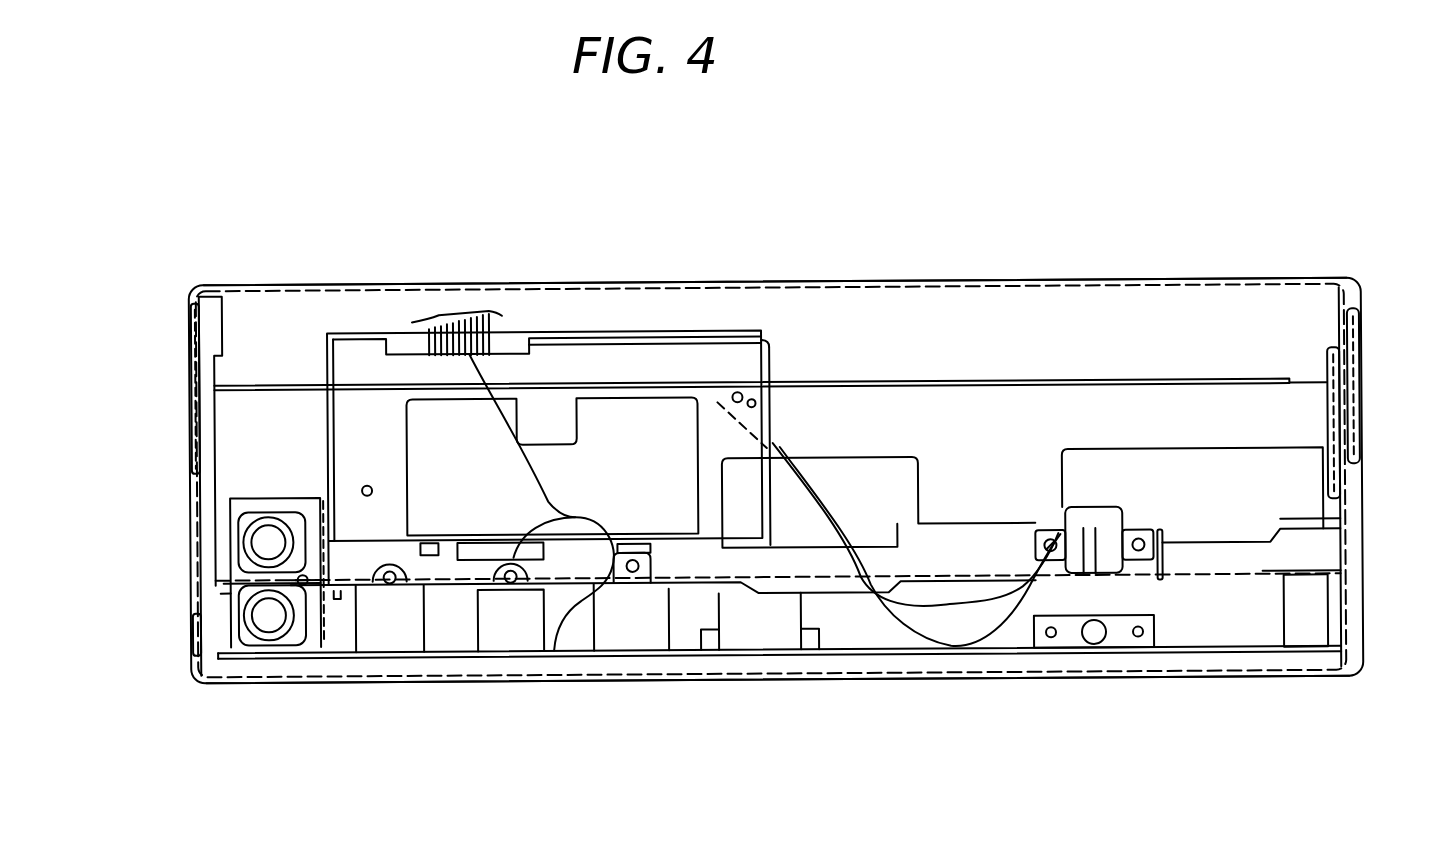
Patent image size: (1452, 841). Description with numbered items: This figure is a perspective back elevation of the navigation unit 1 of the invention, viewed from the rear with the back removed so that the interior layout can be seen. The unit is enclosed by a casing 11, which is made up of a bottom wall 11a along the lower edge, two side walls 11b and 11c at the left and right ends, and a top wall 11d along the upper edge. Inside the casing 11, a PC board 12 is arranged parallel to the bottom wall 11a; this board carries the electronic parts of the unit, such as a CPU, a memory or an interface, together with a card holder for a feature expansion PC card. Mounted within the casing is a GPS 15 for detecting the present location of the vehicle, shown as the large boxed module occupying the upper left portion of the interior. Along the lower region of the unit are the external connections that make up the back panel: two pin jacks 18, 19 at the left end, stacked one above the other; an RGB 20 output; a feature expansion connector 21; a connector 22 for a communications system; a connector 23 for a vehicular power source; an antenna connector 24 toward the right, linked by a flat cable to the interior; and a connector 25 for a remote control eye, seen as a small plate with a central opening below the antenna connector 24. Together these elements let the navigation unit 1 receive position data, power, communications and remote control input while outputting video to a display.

The navigation unit 1 is at (1150, 245).
The casing 11 is at (935, 281).
The bottom wall 11a is at (892, 673).
The side wall 11b is at (189, 396).
The side wall 11c is at (1364, 377).
The top wall 11d is at (652, 281).
The PC board 12 is at (1250, 652).
The GPS 15 is at (367, 445).
The pin jack 18 is at (246, 539).
The pin jack 19 is at (243, 608).
The RGB output 20 is at (396, 631).
The feature expansion connector 21 is at (510, 638).
The connector for a communications system 22 is at (623, 631).
The connector for a vehicular power source 23 is at (757, 634).
The antenna connector 24 is at (1106, 565).
The connector for a remote control eye 25 is at (1093, 638).